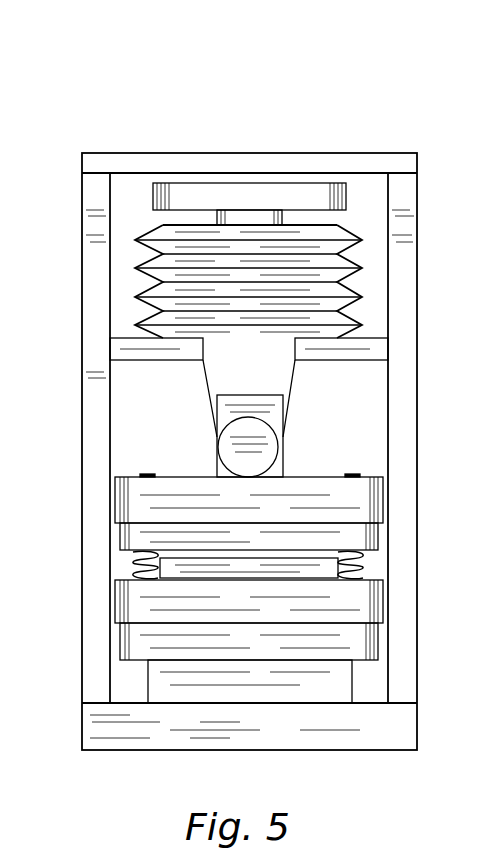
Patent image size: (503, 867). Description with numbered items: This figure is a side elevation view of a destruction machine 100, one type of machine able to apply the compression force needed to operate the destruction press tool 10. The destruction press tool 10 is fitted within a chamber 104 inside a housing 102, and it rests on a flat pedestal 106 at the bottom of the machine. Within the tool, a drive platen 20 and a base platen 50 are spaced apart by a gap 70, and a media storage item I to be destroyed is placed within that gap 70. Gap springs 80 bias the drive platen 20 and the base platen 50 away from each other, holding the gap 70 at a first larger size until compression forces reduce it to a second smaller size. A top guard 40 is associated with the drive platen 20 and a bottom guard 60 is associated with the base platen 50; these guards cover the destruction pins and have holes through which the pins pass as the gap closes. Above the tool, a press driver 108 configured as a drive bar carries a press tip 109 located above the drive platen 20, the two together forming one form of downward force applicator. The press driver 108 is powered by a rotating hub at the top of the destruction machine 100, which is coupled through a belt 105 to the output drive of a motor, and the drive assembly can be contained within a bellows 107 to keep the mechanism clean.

The destruction machine 100 is at (326, 104).
The housing 102 is at (402, 206).
The chamber 104 is at (372, 387).
The belt 105 is at (173, 197).
The pedestal 106 is at (287, 683).
The bellows 107 is at (357, 266).
The press driver 108 is at (223, 375).
The press tip 109 is at (236, 454).
The destruction press tool 10 is at (350, 455).
The drive platen 20 is at (368, 500).
The top guard 40 is at (370, 535).
The gap 70 is at (377, 565).
The gap springs 80 is at (140, 573).
The media storage item I is at (315, 568).
The bottom guard 60 is at (352, 617).
The base platen 50 is at (353, 645).